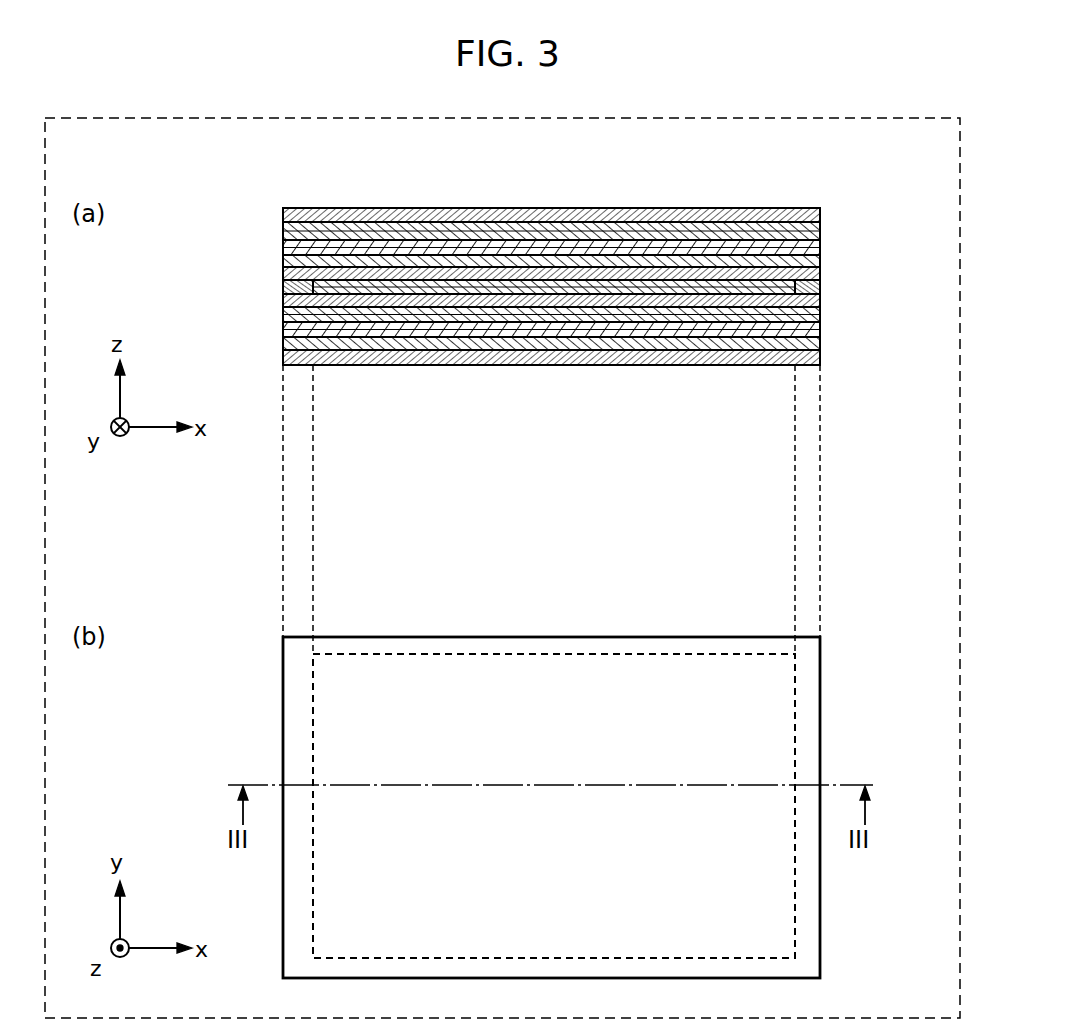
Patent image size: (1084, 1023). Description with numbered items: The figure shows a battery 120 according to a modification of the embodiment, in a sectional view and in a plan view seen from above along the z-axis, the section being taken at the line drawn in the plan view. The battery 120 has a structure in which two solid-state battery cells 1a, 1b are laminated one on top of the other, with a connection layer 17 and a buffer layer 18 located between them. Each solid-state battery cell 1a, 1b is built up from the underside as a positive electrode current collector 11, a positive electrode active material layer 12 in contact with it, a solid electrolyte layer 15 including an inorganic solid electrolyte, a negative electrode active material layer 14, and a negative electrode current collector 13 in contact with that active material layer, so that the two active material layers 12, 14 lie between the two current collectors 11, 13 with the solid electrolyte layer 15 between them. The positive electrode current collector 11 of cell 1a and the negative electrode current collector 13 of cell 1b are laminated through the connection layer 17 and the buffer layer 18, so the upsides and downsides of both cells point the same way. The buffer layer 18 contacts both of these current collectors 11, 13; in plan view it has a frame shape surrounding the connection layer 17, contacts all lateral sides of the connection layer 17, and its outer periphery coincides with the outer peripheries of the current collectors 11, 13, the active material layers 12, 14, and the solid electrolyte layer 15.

The battery 120 is at (274, 190).
The solid-state battery cell 1a is at (890, 170).
The solid-state battery cell 1b is at (890, 308).
The positive electrode current collector 11 is at (820, 273).
The positive electrode active material layer 12 is at (820, 261).
The negative electrode current collector 13 is at (820, 215).
The negative electrode active material layer 14 is at (820, 231).
The solid electrolyte layer 15 is at (820, 247).
The connection layer 17 is at (284, 287).
The buffer layer 18 is at (283, 290).